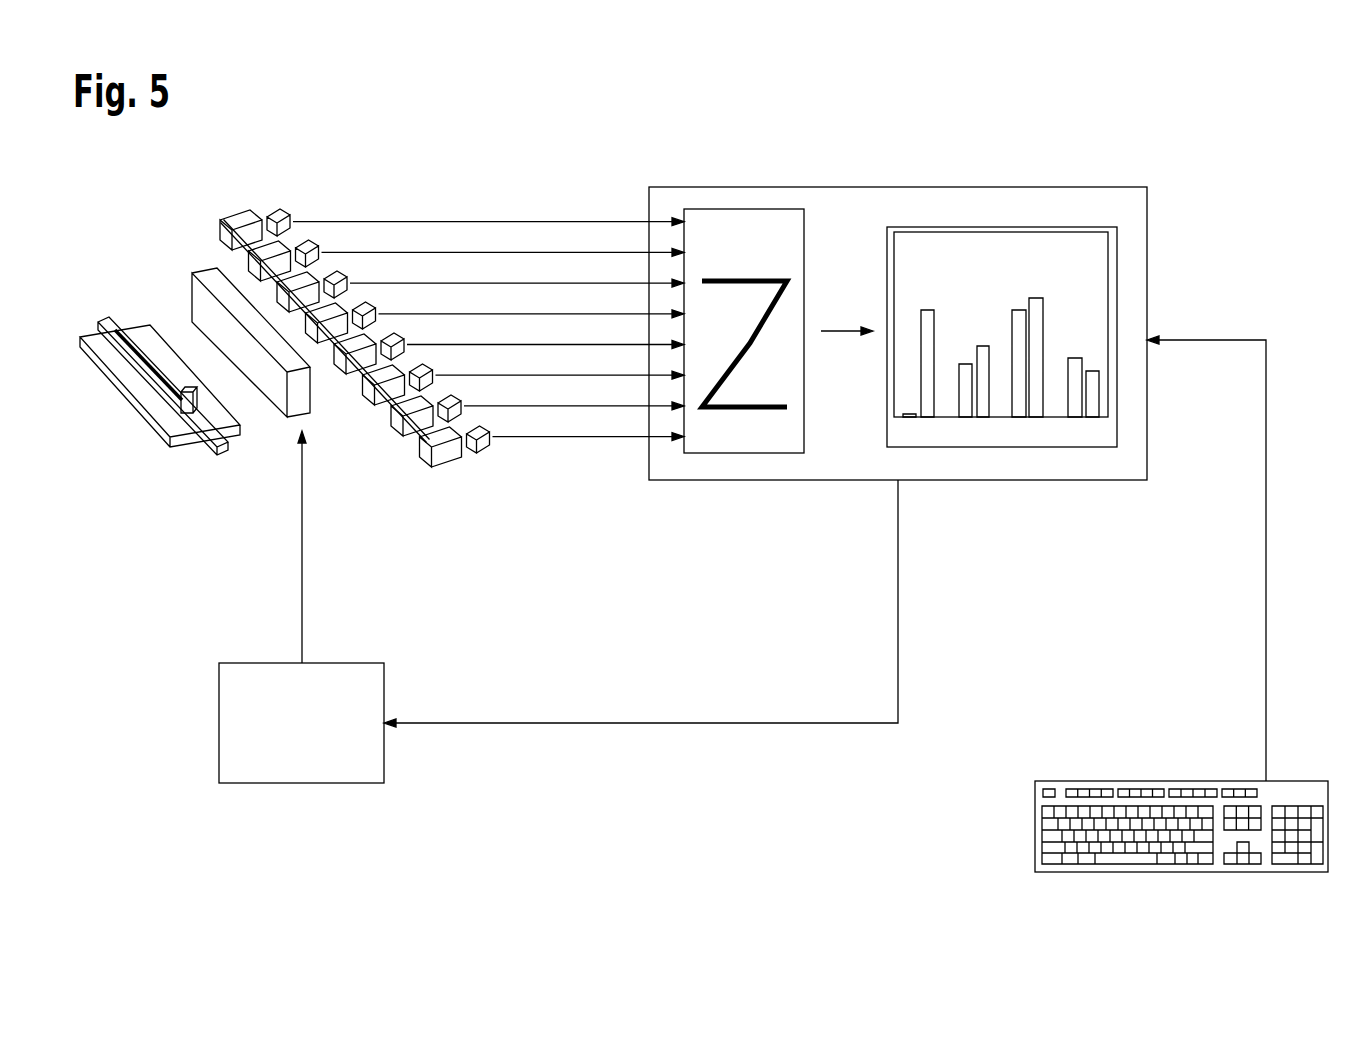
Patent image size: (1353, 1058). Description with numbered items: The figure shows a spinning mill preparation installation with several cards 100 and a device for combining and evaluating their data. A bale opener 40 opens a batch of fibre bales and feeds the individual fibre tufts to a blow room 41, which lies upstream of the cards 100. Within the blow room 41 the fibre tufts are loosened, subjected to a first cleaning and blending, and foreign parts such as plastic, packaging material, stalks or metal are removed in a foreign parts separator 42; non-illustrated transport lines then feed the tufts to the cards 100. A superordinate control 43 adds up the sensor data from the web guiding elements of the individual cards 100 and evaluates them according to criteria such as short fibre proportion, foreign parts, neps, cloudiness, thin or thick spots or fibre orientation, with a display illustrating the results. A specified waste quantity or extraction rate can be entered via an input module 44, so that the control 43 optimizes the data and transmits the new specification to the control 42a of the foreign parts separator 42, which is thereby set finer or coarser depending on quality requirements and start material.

The bale opener 40 is at (141, 427).
The blow room 41 is at (185, 268).
The foreign parts separator 42 is at (273, 395).
The control of the foreign parts separator 42a is at (318, 772).
The superordinate control 43 is at (1015, 472).
The input module 44 is at (1043, 800).
The card 100 is at (310, 283).